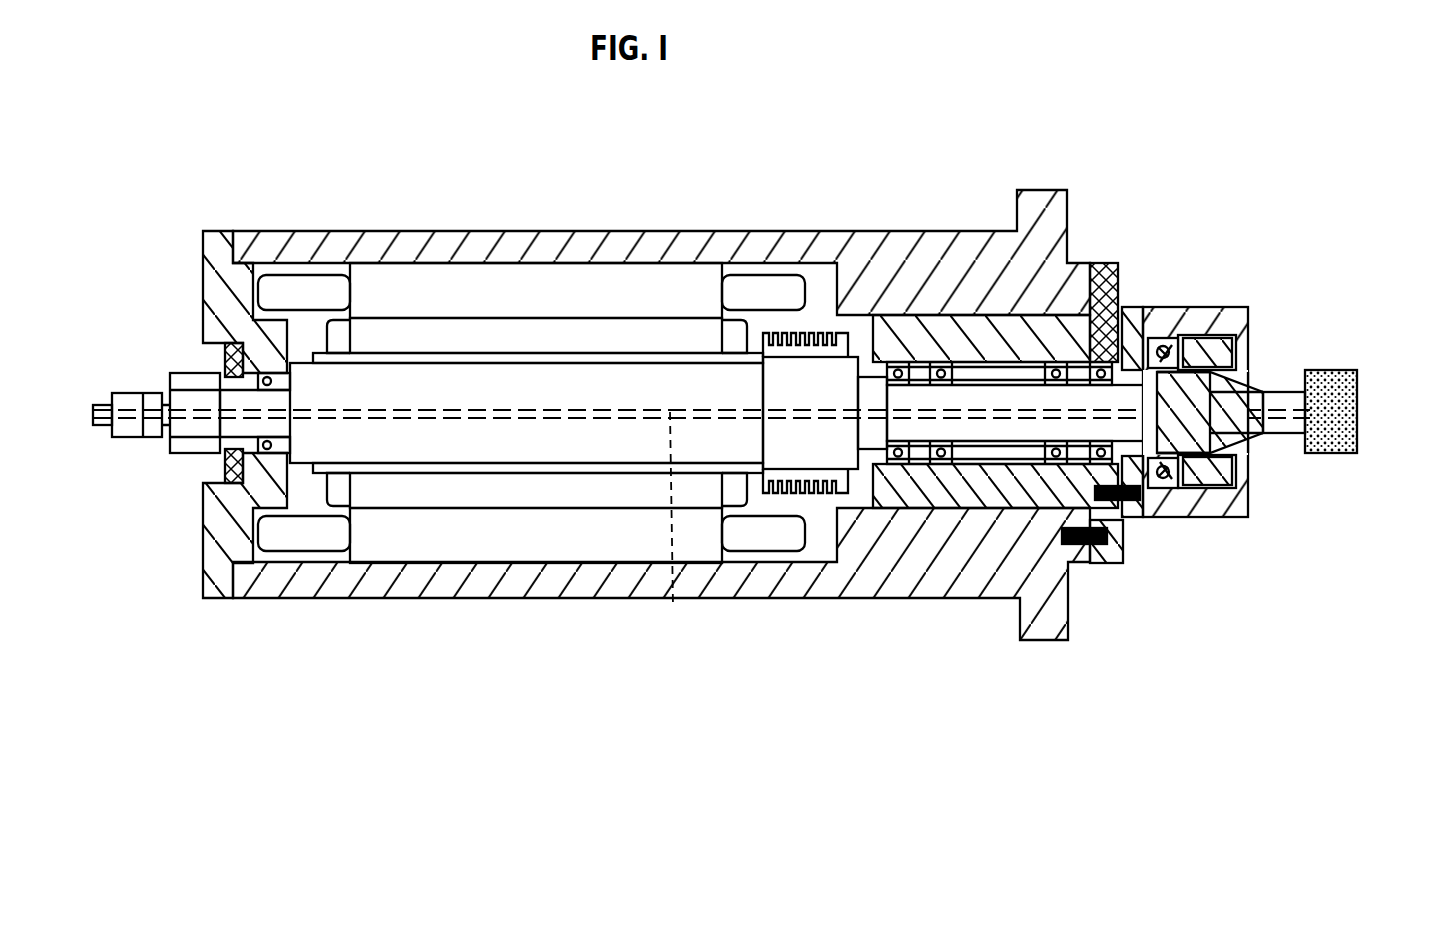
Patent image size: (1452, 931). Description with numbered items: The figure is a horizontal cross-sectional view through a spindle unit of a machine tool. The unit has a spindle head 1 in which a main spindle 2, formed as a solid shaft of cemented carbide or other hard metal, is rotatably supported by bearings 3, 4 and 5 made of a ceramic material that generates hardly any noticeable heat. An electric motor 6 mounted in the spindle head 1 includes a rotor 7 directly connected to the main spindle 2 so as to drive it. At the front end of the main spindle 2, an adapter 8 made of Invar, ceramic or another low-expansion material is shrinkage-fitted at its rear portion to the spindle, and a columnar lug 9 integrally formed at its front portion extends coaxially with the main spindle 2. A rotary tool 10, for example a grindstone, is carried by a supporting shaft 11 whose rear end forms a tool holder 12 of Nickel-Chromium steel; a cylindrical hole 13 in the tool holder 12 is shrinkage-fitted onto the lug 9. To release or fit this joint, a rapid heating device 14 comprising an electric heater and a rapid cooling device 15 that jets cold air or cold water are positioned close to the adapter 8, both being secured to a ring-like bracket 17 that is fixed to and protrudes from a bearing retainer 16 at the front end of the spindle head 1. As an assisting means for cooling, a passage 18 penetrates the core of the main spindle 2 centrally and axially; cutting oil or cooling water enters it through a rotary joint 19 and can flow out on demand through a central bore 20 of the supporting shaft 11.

The spindle head 1 is at (858, 242).
The main spindle 2 is at (995, 395).
The bearing 3 is at (1105, 350).
The bearing 4 is at (940, 362).
The bearing 5 is at (265, 372).
The electric motor 6 is at (572, 283).
The rotor 7 is at (668, 328).
The adapter 8 is at (1135, 310).
The columnar lug 9 is at (1250, 372).
The rotary tool 10 is at (1357, 376).
The supporting shaft 11 is at (1292, 392).
The tool holder 12 is at (1250, 440).
The cylindrical hole 13 is at (1155, 492).
The rapid heating device 14 is at (1205, 335).
The rapid cooling device 15 is at (1170, 342).
The bearing retainer 16 is at (1130, 548).
The ring-like bracket 17 is at (1237, 322).
The passage 18 is at (684, 528).
The rotary joint 19 is at (128, 414).
The central bore 20 is at (1262, 438).